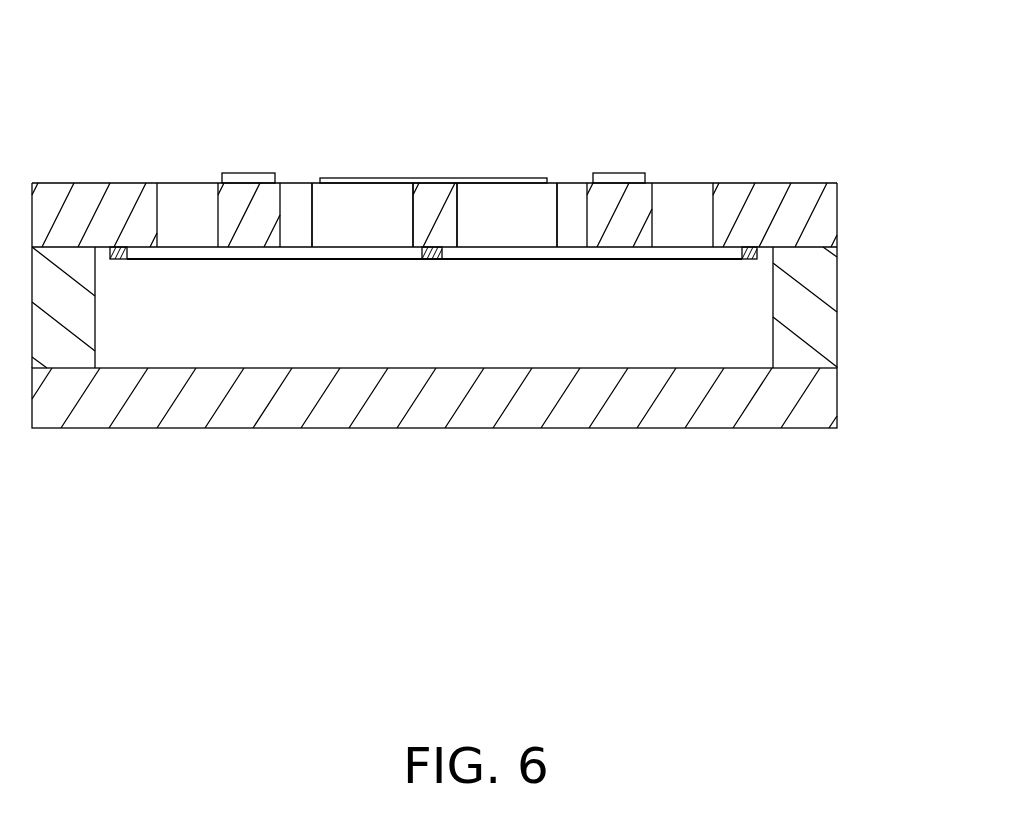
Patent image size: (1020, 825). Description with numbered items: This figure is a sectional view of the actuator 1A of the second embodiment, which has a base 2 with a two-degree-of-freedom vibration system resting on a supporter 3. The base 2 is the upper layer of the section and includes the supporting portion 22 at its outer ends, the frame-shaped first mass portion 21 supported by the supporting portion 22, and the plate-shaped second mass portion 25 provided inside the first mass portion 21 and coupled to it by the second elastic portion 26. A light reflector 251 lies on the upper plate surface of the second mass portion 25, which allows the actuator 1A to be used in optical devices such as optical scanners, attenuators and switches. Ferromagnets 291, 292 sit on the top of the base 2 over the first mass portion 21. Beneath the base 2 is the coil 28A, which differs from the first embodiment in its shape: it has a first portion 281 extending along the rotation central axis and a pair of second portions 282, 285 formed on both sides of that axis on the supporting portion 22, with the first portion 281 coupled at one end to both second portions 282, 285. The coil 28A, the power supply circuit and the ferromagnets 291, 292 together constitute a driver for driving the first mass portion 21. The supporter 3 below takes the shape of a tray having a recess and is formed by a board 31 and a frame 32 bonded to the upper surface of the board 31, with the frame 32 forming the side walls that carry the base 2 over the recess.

The actuator 1A is at (785, 104).
The base 2 is at (838, 215).
The supporter 3 is at (838, 299).
The first mass portion 21 is at (238, 220).
The supporting portion 22 is at (98, 213).
The second mass portion 25 is at (342, 216).
The second elastic portion 26 is at (443, 213).
The light reflector 251 is at (408, 178).
The ferromagnet 291 is at (623, 180).
The ferromagnet 292 is at (242, 180).
The first portion 281 is at (437, 261).
The second portion 282 is at (750, 261).
The second portion 285 is at (116, 261).
The coil 28A is at (547, 261).
The board 31 is at (810, 405).
The frame 32 is at (805, 348).